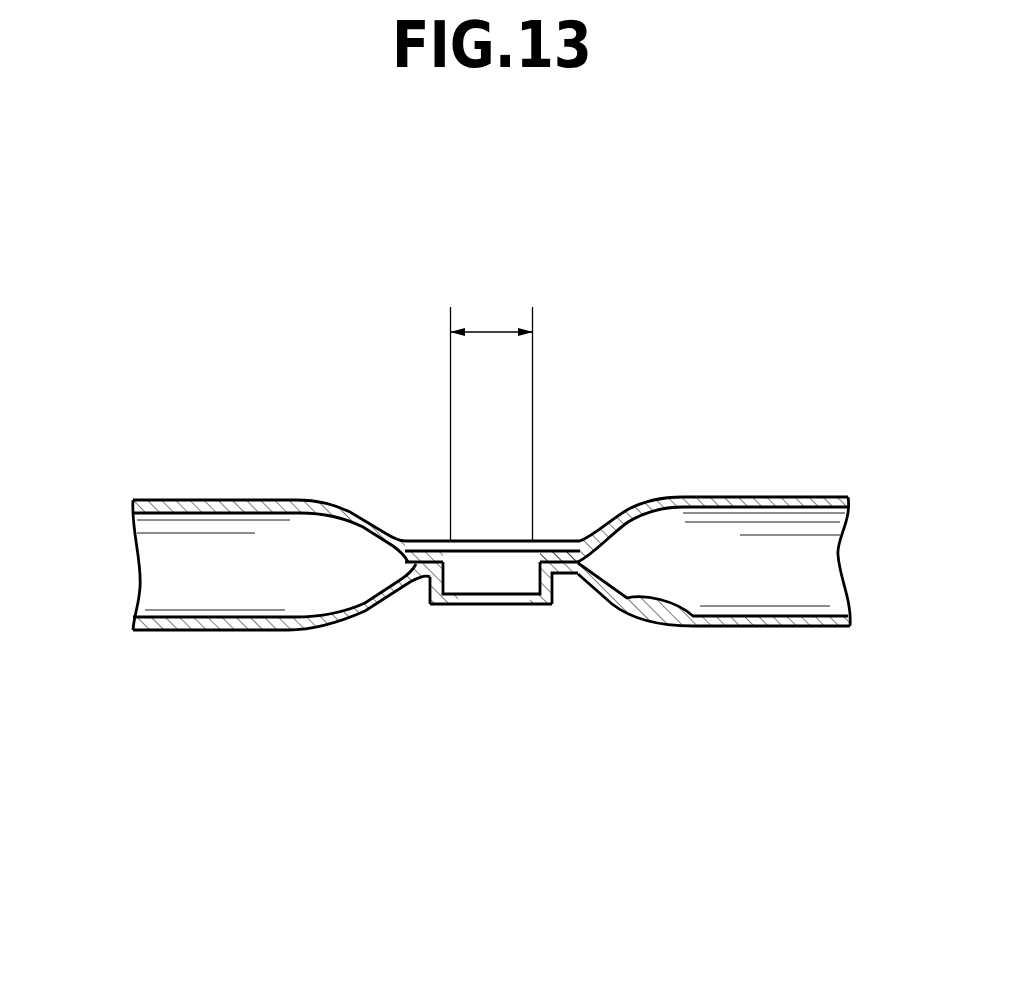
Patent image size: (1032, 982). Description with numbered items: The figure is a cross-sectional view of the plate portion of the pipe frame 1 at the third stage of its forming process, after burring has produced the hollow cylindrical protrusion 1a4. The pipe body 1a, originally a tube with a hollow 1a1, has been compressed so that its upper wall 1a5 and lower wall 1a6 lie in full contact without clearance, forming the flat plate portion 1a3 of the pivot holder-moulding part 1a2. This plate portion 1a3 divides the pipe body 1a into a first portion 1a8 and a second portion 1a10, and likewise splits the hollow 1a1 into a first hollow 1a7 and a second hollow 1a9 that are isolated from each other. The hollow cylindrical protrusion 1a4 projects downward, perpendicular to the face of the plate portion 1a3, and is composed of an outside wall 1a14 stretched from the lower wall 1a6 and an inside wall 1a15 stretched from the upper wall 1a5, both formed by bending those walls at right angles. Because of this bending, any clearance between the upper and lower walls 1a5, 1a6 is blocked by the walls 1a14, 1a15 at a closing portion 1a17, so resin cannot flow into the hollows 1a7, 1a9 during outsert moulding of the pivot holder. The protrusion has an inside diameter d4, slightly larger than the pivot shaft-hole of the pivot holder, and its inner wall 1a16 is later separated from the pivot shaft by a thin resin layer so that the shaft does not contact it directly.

The pipe frame 1 is at (808, 495).
The pipe body 1a is at (193, 622).
The hollow 1a1 is at (180, 558).
The pivot holder-moulding part 1a2 is at (610, 514).
The plate portion 1a3 is at (545, 555).
The hollow cylindrical protrusion 1a4 is at (553, 598).
The upper wall 1a5 is at (427, 555).
The lower wall 1a6 is at (417, 578).
The first hollow 1a7 is at (345, 543).
The first portion 1a8 is at (360, 617).
The second hollow 1a9 is at (610, 555).
The second portion 1a10 is at (670, 610).
The outside wall 1a14 is at (428, 590).
The inside wall 1a15 is at (455, 570).
The inner wall 1a16 is at (487, 565).
The closing portion 1a17 is at (438, 605).
The inside diameter d4 is at (490, 328).